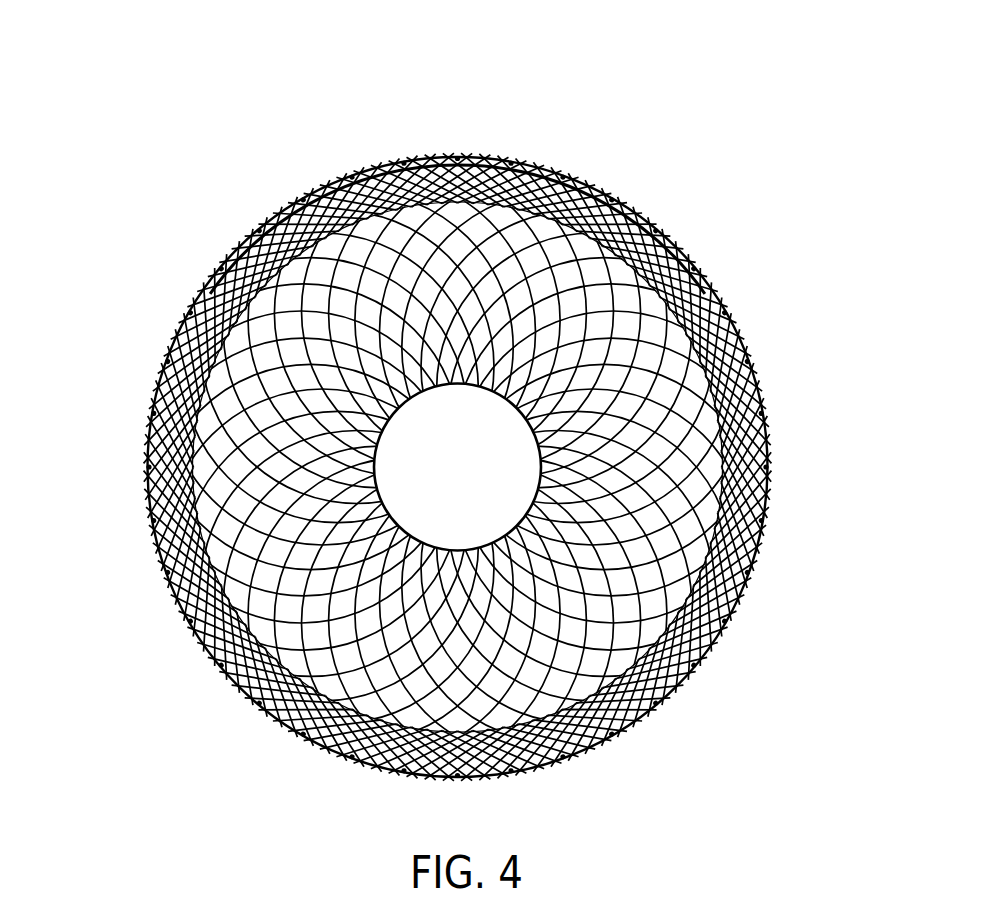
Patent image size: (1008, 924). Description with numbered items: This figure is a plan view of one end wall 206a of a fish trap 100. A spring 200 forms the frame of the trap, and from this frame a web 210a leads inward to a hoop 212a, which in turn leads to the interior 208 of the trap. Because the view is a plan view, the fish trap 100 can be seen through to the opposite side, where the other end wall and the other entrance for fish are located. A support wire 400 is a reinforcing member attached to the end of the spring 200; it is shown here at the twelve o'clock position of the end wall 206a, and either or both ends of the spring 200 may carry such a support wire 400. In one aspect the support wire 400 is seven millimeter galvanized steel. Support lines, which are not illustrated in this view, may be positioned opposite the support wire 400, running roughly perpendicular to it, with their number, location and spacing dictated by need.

The fish trap 100 is at (264, 76).
The spring 200 is at (712, 294).
The end wall 206a is at (745, 432).
The interior 208 is at (482, 478).
The web 210a is at (662, 550).
The hoop 212a is at (262, 545).
The support wire 400 is at (455, 160).